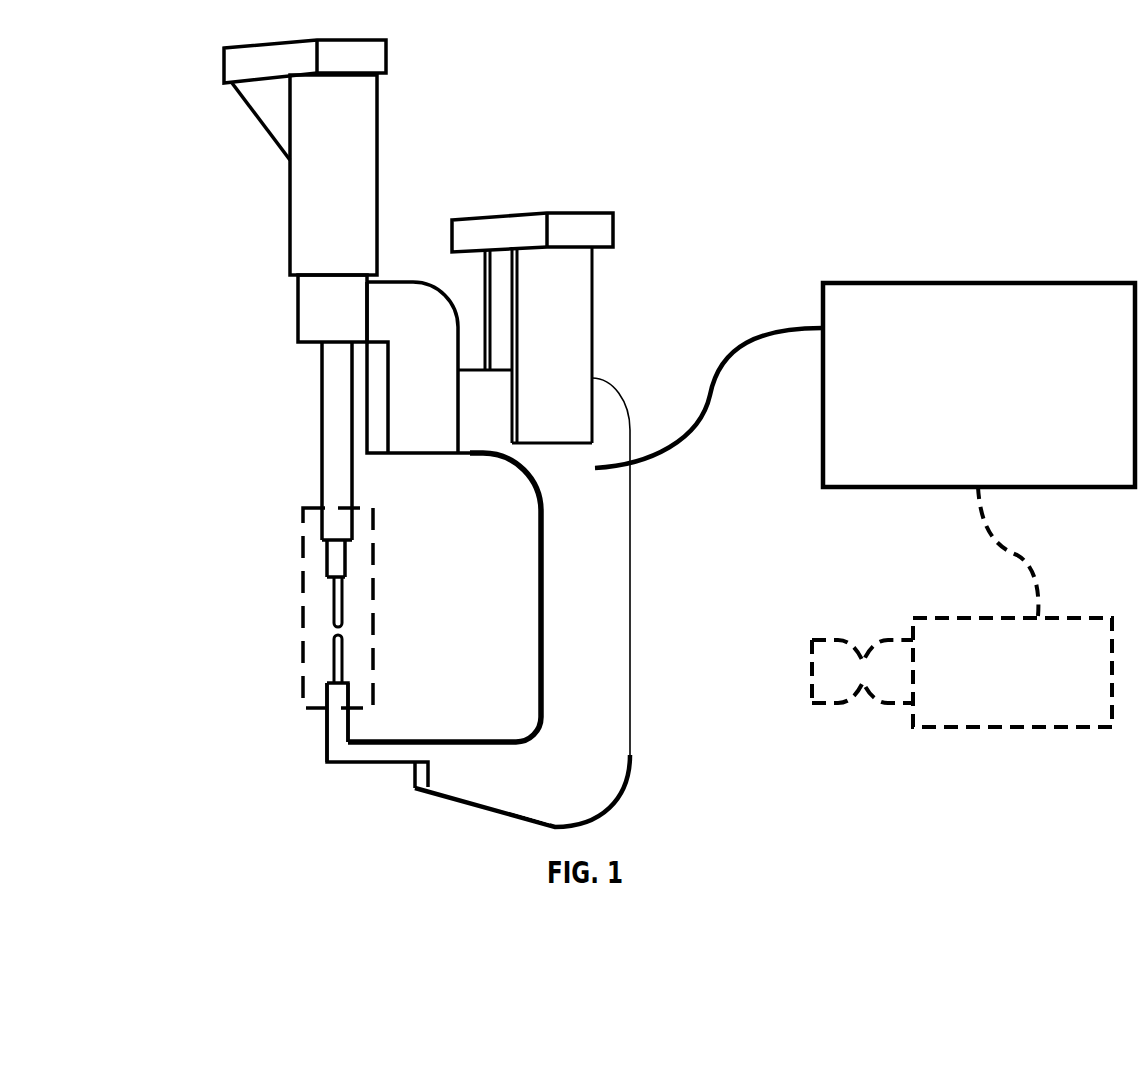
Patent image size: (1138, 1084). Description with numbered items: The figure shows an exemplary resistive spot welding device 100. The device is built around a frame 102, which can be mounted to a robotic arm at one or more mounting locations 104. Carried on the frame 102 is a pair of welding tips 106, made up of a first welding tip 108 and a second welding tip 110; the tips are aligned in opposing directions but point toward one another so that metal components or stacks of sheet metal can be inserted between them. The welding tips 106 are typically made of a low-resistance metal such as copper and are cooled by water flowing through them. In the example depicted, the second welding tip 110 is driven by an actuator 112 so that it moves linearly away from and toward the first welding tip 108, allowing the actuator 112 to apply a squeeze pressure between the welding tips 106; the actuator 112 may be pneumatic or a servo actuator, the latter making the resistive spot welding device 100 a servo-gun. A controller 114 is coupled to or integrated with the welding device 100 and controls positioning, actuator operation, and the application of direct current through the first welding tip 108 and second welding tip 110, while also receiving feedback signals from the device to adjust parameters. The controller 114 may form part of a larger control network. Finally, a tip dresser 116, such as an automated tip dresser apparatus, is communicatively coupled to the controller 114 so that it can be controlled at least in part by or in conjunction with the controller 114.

The resistive spot welding device 100 is at (494, 133).
The frame 102 is at (593, 732).
The mounting locations 104 is at (597, 233).
The welding tips 106 is at (300, 689).
The first welding tip 108 is at (330, 655).
The second welding tip 110 is at (330, 607).
The actuator 112 is at (307, 232).
The controller 114 is at (1000, 283).
The tip dresser 116 is at (1030, 727).